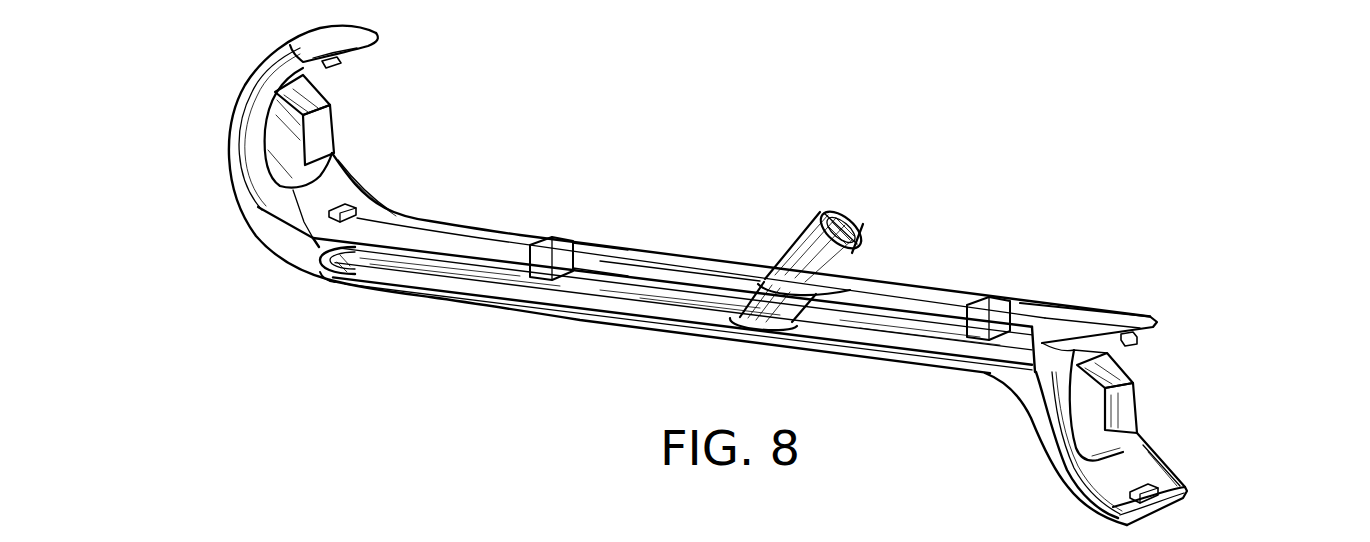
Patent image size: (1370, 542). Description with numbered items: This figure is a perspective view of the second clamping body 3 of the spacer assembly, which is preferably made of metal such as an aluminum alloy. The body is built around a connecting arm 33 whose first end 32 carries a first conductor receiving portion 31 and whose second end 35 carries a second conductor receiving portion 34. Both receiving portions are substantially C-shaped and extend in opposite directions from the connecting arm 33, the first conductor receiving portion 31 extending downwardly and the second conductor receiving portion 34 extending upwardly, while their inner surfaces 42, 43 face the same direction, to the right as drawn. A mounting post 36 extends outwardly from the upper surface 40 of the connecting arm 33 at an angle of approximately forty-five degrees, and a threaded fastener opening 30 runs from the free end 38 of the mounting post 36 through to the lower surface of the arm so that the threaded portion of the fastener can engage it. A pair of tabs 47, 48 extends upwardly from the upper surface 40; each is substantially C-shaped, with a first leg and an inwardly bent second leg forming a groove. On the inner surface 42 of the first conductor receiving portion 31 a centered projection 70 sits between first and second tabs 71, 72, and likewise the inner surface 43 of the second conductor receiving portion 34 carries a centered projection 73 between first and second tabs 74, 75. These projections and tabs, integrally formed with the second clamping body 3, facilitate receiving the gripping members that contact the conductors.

The second clamping body 3 is at (918, 282).
The fastener opening 30 is at (857, 232).
The first conductor receiving portion 31 is at (1052, 458).
The first end 32 is at (1152, 513).
The connecting arm 33 is at (466, 227).
The second conductor receiving portion 34 is at (238, 166).
The second end 35 is at (360, 36).
The mounting post 36 is at (795, 248).
The free end 38 is at (845, 211).
The upper surface 40 is at (620, 268).
The inner surface 42 is at (1124, 464).
The inner surface 43 is at (327, 186).
The tab 47 is at (975, 314).
The tab 48 is at (538, 258).
The projection 70 is at (1120, 396).
The first tab 71 is at (1128, 489).
The second tab 72 is at (1138, 341).
The projection 73 is at (318, 128).
The first tab 74 is at (341, 65).
The second tab 75 is at (325, 208).